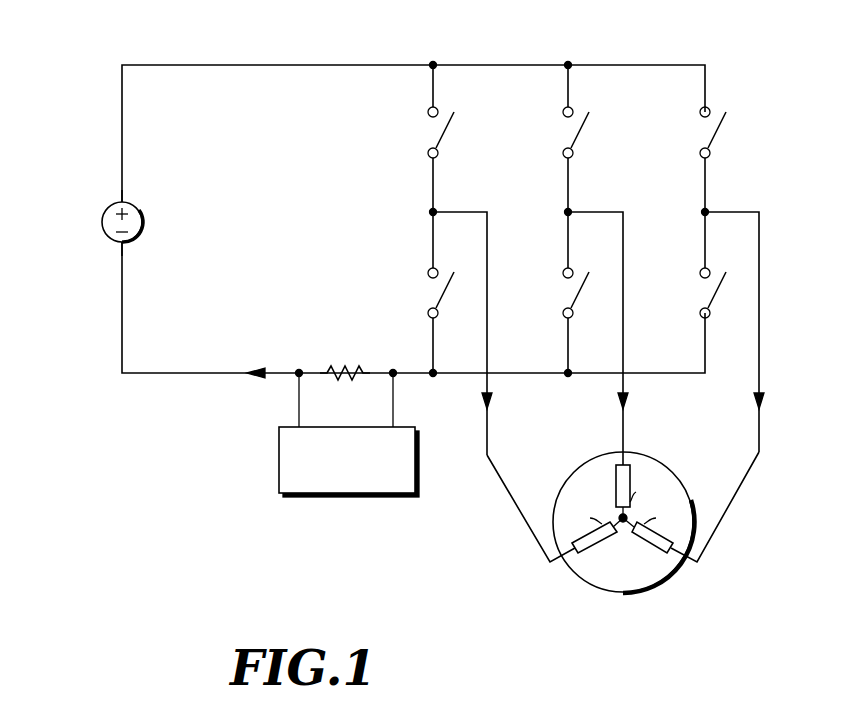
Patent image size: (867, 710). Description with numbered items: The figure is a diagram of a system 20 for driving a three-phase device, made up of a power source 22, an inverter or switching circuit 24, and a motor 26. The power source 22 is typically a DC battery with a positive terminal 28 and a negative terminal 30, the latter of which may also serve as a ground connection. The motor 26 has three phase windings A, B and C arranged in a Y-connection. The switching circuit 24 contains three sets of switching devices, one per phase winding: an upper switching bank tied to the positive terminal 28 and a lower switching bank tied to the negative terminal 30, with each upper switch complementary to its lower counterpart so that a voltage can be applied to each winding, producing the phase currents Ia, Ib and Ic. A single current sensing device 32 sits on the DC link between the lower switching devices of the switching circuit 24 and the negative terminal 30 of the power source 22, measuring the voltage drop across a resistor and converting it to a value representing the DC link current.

The system 20 is at (110, 56).
The power source 22 is at (102, 222).
The inverter or switching circuit 24 is at (718, 54).
The motor 26 is at (649, 590).
The positive terminal 28 is at (121, 202).
The negative terminal 30 is at (123, 243).
The current sensing device 32 is at (279, 462).